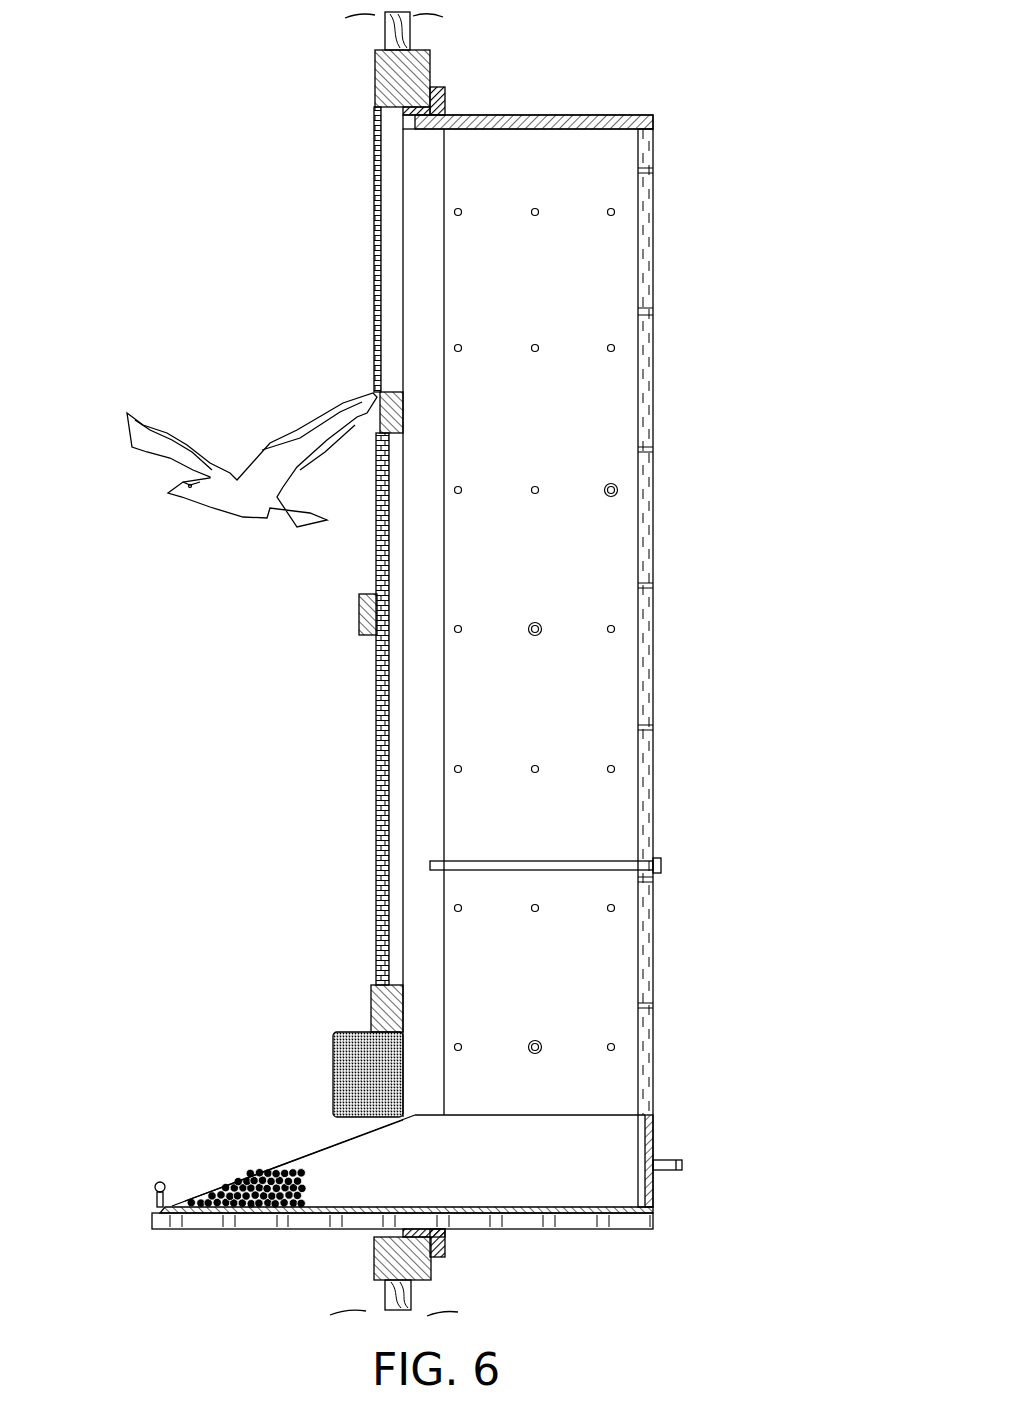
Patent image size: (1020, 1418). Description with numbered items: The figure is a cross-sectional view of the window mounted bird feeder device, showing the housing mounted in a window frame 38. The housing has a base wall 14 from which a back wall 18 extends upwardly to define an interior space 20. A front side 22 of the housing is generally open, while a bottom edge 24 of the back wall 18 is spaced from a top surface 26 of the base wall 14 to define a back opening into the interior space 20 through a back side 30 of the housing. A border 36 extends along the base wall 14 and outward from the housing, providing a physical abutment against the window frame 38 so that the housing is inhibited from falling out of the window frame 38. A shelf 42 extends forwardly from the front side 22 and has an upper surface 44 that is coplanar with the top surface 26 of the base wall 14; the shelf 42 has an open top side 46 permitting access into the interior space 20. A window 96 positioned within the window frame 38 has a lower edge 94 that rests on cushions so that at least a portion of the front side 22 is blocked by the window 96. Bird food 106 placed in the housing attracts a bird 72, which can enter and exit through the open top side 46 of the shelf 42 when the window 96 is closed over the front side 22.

The base wall 14 is at (575, 1225).
The back wall 18 is at (644, 667).
The interior space 20 is at (574, 400).
The front side 22 is at (393, 818).
The bottom edge 24 is at (643, 1115).
The top surface 26 is at (610, 1210).
The back side 30 is at (647, 533).
The border 36 is at (445, 100).
The window frame 38 is at (388, 88).
The shelf 42 is at (253, 1228).
The upper surface 44 is at (190, 1207).
The open top side 46 is at (313, 1133).
The bird 72 is at (131, 416).
The lower edge 94 is at (373, 1033).
The window 96 is at (383, 685).
The bird food 106 is at (235, 1183).